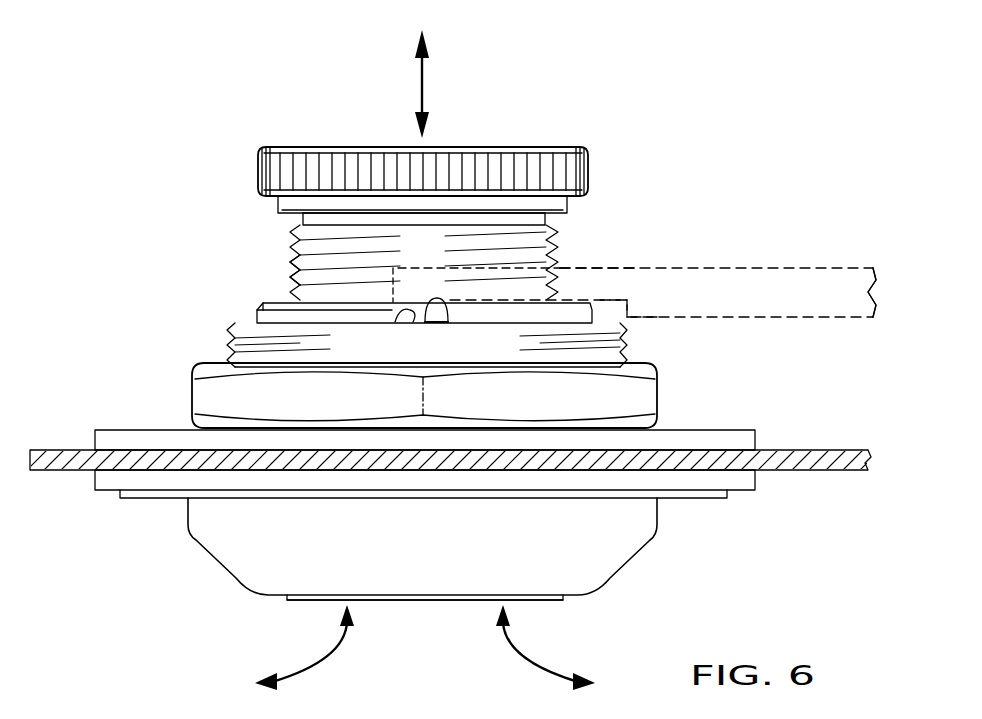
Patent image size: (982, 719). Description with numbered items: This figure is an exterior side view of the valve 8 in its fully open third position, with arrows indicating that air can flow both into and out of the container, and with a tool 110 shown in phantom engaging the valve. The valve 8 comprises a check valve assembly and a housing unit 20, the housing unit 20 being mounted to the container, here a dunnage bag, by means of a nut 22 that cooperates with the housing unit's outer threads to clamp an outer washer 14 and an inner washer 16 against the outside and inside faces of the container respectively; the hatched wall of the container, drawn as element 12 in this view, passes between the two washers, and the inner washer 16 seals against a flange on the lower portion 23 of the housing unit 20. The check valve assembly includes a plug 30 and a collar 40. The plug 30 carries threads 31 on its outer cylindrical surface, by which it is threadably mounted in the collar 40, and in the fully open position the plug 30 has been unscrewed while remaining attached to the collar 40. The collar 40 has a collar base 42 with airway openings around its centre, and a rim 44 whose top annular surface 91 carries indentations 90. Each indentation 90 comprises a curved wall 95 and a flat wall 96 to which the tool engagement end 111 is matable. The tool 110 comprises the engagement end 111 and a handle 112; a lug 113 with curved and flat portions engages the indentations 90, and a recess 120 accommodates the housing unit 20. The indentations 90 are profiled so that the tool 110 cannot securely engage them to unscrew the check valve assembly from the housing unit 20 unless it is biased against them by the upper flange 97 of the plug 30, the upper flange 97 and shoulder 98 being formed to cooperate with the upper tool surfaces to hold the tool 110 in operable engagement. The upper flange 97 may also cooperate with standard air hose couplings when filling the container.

The valve 8 is at (190, 193).
The plug 30 is at (277, 147).
The upper flange 97 is at (566, 205).
The shoulder 98 is at (548, 228).
The threads 31 is at (288, 256).
The top annular surface 91 is at (312, 281).
The rim 44 is at (262, 303).
The collar 40 is at (251, 317).
The lug 113 is at (418, 288).
The curved wall 95 is at (468, 300).
The flat wall 96 is at (413, 325).
The indentations 90 is at (447, 323).
The tool 110 is at (677, 243).
The tool engagement end 111 is at (566, 266).
The handle 112 is at (808, 266).
The recess 120 is at (622, 328).
The housing unit 20 is at (226, 339).
The nut 22 is at (202, 390).
The outer washer 14 is at (115, 426).
The panel 12 is at (816, 443).
The inner washer 16 is at (102, 499).
The lower portion 23 is at (226, 542).
The collar base 42 is at (432, 601).